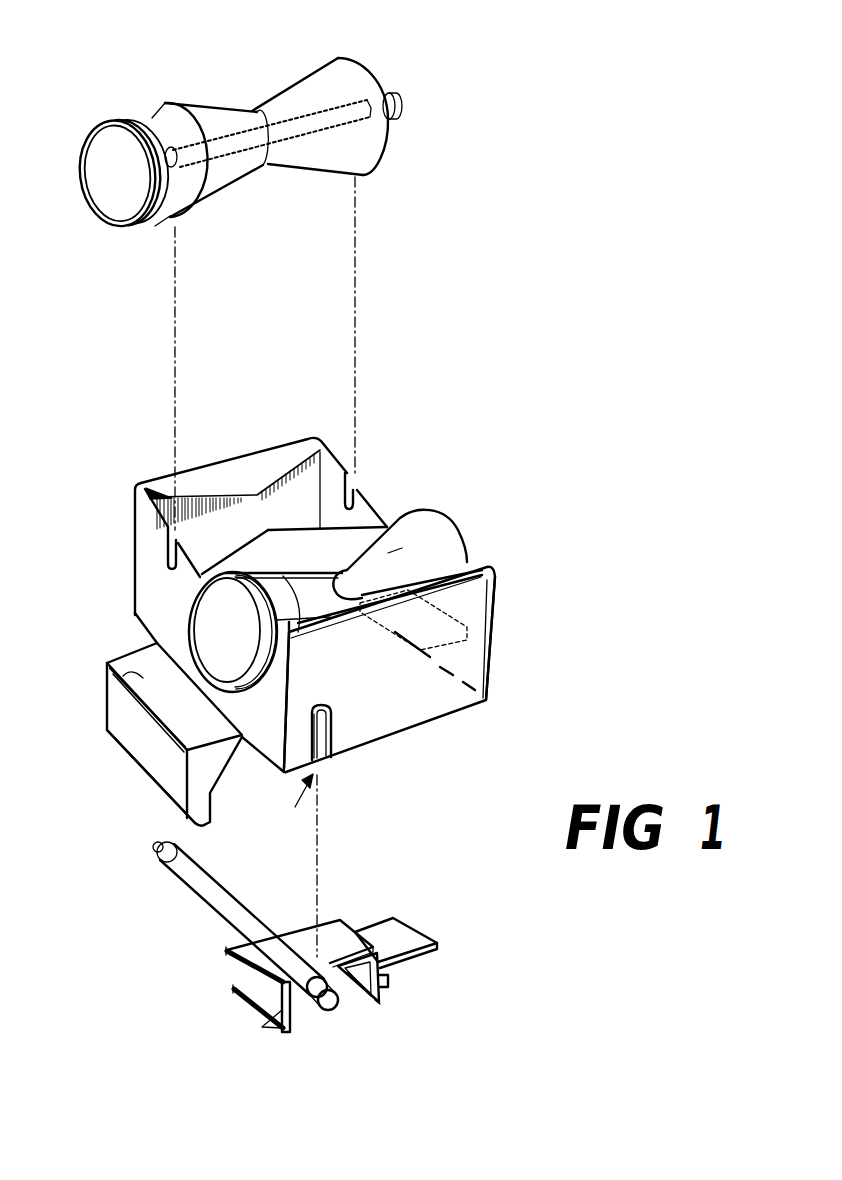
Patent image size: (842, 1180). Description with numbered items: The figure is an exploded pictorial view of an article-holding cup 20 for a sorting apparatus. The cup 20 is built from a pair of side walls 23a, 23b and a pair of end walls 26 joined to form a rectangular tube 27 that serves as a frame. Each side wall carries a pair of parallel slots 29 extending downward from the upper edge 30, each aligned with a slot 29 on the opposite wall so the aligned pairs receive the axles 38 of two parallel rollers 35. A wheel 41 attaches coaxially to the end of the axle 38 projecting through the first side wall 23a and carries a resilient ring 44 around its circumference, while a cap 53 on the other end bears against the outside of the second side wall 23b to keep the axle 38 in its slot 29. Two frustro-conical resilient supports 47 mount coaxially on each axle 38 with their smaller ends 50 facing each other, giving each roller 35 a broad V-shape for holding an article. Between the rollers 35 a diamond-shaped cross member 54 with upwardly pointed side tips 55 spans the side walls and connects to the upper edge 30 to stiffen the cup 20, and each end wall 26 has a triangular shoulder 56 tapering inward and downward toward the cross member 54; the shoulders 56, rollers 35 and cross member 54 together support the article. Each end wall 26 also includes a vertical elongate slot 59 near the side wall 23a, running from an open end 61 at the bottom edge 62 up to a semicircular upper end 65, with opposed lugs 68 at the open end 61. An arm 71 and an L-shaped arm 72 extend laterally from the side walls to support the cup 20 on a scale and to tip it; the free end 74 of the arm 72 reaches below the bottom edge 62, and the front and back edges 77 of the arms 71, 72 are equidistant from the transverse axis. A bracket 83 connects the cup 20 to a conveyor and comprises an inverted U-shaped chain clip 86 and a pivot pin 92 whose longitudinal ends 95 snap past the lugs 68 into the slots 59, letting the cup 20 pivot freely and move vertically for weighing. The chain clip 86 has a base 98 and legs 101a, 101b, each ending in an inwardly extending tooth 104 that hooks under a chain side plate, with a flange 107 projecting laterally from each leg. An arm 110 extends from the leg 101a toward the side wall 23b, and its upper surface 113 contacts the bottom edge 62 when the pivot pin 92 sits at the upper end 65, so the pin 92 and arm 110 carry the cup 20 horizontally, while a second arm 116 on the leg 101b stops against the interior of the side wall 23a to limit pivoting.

The article-holding cup 20 is at (358, 556).
The rollers 35 is at (257, 302).
The axle 38 is at (168, 150).
The wheel 41 is at (92, 163).
The resilient ring 44 is at (133, 227).
The resilient supports 47 is at (207, 113).
The smaller ends 50 is at (263, 167).
The cap 53 is at (389, 93).
The rectangular tube 27 is at (308, 609).
The upper edge 30 is at (150, 512).
The end walls 26 is at (234, 536).
The shoulder 56 is at (248, 477).
The slots 29 is at (175, 570).
The side tips 55 is at (268, 531).
The cross member 54 is at (321, 566).
The first side wall 23a is at (155, 615).
The second side wall 23b is at (472, 658).
The bottom edge 62 is at (455, 717).
The arm 71 is at (450, 622).
The upper ends 65 is at (317, 706).
The lugs 68 is at (333, 755).
The vertical elongate slot 59 is at (287, 728).
The open end 61 is at (297, 865).
The L-shaped arm 72 is at (156, 726).
The free end 74 is at (140, 770).
The front and back edges 77 is at (127, 655).
The bracket 83 is at (317, 973).
The pivot pin 92 is at (203, 870).
The longitudinal ends 95 is at (153, 846).
The chain clip 86 is at (340, 998).
The base 98 is at (308, 930).
The second arm 116 is at (227, 958).
The upper surface 113 is at (403, 930).
The arm 110 is at (440, 940).
The leg 101a is at (390, 977).
The leg 101b is at (280, 1033).
The tooth 104 is at (297, 1030).
The flange 107 is at (397, 980).